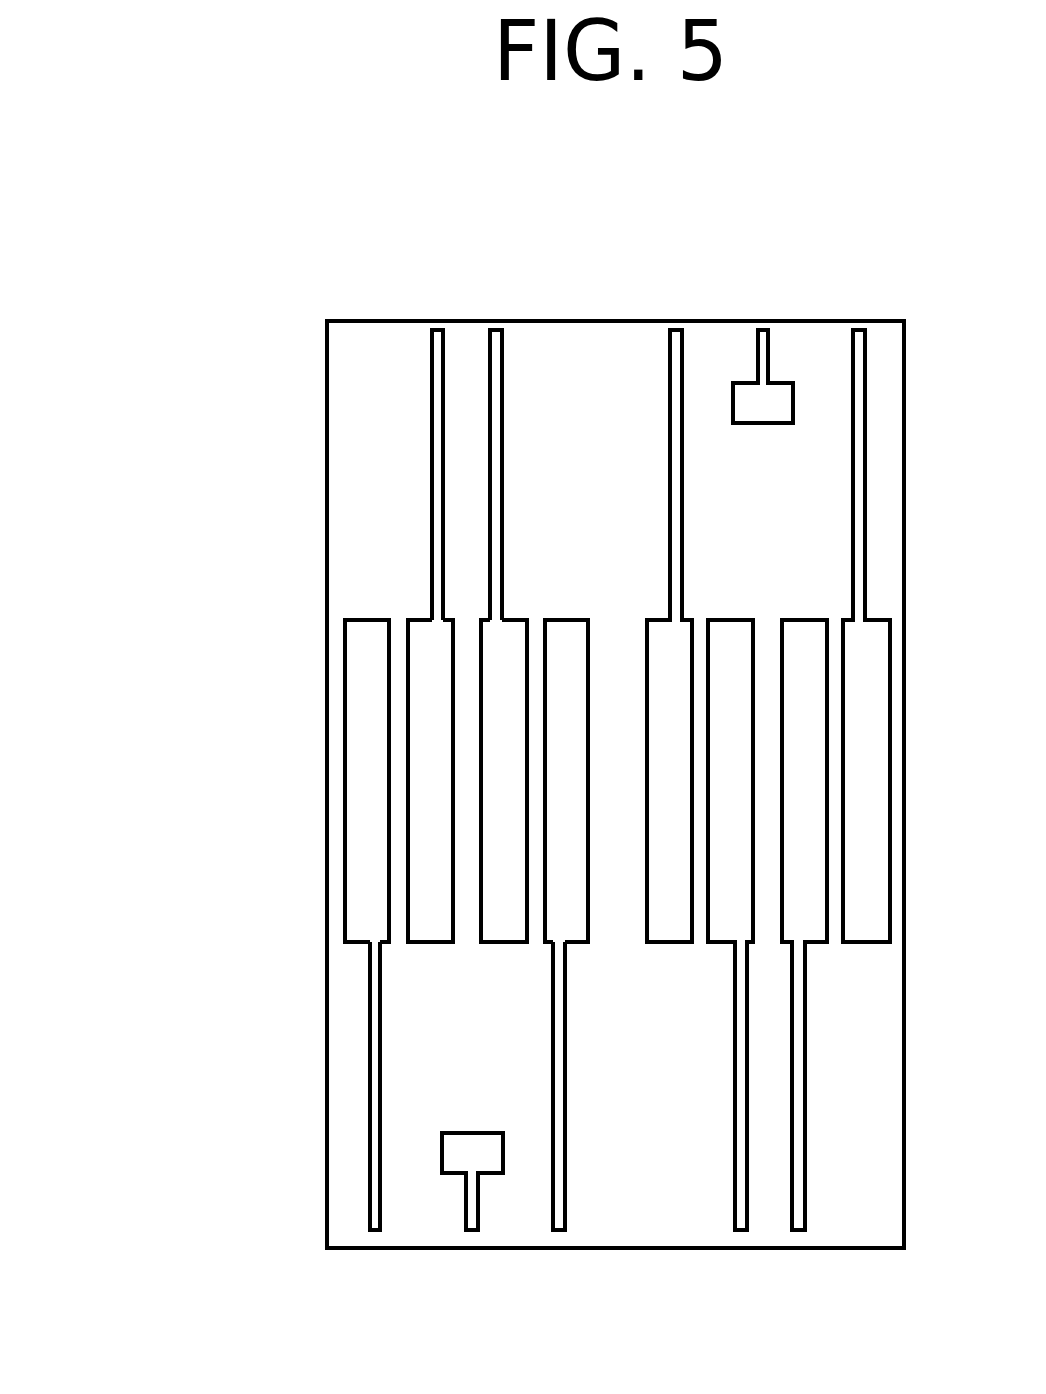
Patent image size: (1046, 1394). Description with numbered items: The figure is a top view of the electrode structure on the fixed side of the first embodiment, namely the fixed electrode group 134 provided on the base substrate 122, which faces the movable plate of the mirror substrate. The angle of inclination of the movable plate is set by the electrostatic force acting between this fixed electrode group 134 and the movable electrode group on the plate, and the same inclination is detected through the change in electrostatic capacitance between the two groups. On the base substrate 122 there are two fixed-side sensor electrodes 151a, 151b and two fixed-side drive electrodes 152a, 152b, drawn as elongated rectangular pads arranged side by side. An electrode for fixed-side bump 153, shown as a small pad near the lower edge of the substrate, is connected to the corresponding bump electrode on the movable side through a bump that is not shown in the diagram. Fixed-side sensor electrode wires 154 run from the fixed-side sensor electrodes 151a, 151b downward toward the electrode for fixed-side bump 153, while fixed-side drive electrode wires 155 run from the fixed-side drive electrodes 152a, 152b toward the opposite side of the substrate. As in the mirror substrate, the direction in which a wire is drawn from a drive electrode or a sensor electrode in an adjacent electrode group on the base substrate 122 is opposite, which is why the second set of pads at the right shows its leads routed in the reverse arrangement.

The base substrate 122 is at (540, 321).
The fixed electrode group 134 is at (314, 856).
The fixed-side sensor electrode 151a is at (368, 757).
The fixed-side sensor electrode 151b is at (568, 747).
The fixed-side drive electrode 152a is at (423, 633).
The fixed-side drive electrode 152b is at (490, 638).
The electrode for fixed-side bump 153 is at (458, 1152).
The fixed-side sensor electrode wires 154 is at (558, 1050).
The fixed-side drive electrode wires 155 is at (492, 388).